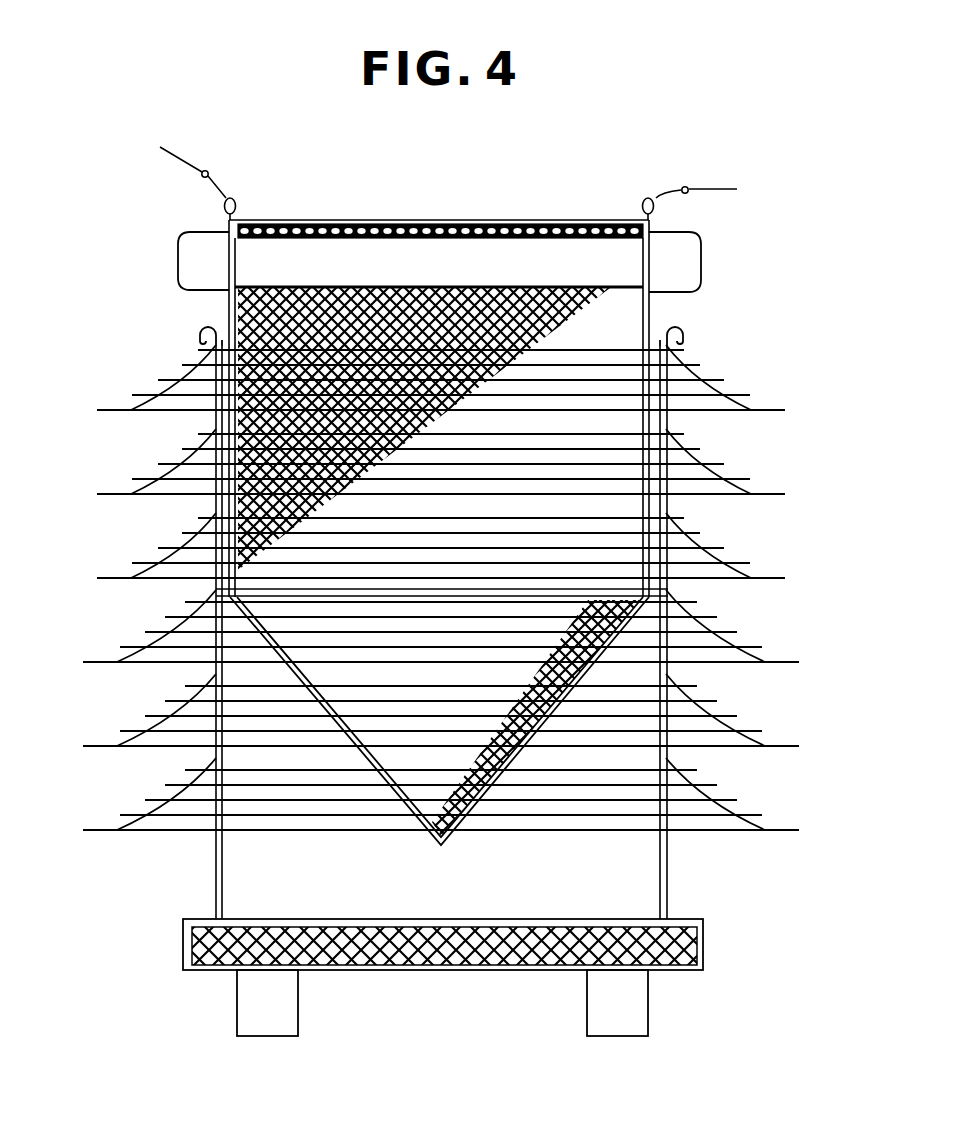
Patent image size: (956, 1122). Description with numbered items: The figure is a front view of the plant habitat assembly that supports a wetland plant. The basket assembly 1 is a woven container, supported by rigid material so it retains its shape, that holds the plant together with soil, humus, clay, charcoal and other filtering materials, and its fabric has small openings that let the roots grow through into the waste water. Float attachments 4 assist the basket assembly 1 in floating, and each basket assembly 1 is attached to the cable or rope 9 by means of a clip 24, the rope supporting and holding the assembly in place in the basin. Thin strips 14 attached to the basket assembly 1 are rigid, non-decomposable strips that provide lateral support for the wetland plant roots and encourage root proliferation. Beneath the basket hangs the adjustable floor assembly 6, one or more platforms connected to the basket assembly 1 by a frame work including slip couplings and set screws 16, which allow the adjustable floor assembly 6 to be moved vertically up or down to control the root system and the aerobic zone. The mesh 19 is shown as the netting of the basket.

The basket assembly 1 is at (652, 307).
The float attachments 4 is at (701, 260).
The adjustable floor assembly 6 is at (703, 945).
The cable or rope 9 is at (180, 153).
The thin strips 14 is at (735, 397).
The slip couplings and set screws 16 is at (668, 586).
The net mesh 19 is at (527, 312).
The clip 24 is at (657, 192).